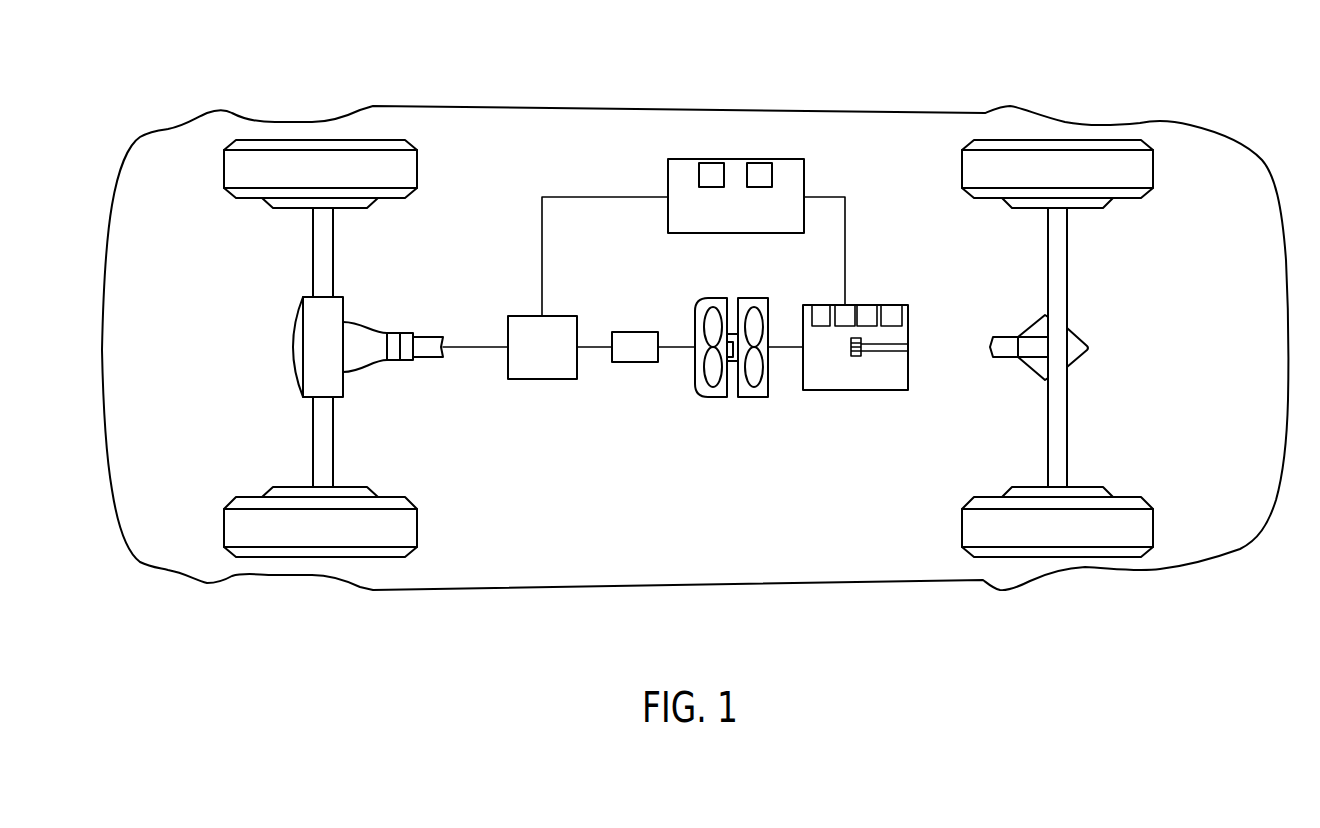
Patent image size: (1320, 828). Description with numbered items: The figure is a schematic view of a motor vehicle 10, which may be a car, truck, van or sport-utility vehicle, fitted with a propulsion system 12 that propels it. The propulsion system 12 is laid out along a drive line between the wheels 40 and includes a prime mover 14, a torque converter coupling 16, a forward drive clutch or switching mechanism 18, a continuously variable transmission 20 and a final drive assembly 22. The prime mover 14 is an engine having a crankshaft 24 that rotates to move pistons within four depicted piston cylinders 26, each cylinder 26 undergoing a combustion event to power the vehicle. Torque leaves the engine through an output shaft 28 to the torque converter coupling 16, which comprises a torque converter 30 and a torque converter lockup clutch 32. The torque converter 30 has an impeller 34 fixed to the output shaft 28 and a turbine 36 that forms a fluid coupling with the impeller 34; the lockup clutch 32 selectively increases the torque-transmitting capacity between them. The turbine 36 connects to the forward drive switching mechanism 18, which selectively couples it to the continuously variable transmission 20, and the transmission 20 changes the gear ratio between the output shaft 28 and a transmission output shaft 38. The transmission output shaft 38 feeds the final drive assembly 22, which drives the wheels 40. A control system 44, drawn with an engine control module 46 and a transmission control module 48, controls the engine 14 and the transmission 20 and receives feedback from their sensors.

The motor vehicle 10 is at (830, 78).
The propulsion system 12 is at (623, 422).
The prime mover 14 is at (856, 341).
The torque converter coupling 16 is at (711, 364).
The forward drive clutch or switching mechanism 18 is at (640, 302).
The continuously variable transmission 20 is at (541, 380).
The final drive assembly 22 is at (392, 300).
The crankshaft 24 is at (883, 354).
The piston cylinders 26 is at (872, 280).
The output shaft 28 is at (798, 358).
The torque converter 30 is at (686, 394).
The torque converter lockup clutch 32 is at (728, 416).
The impeller 34 is at (753, 388).
The turbine 36 is at (705, 370).
The transmission output shaft 38 is at (475, 348).
The wheels 40 is at (418, 170).
The control system 44 is at (693, 214).
The engine control module 46 is at (707, 163).
The transmission control module 48 is at (760, 163).